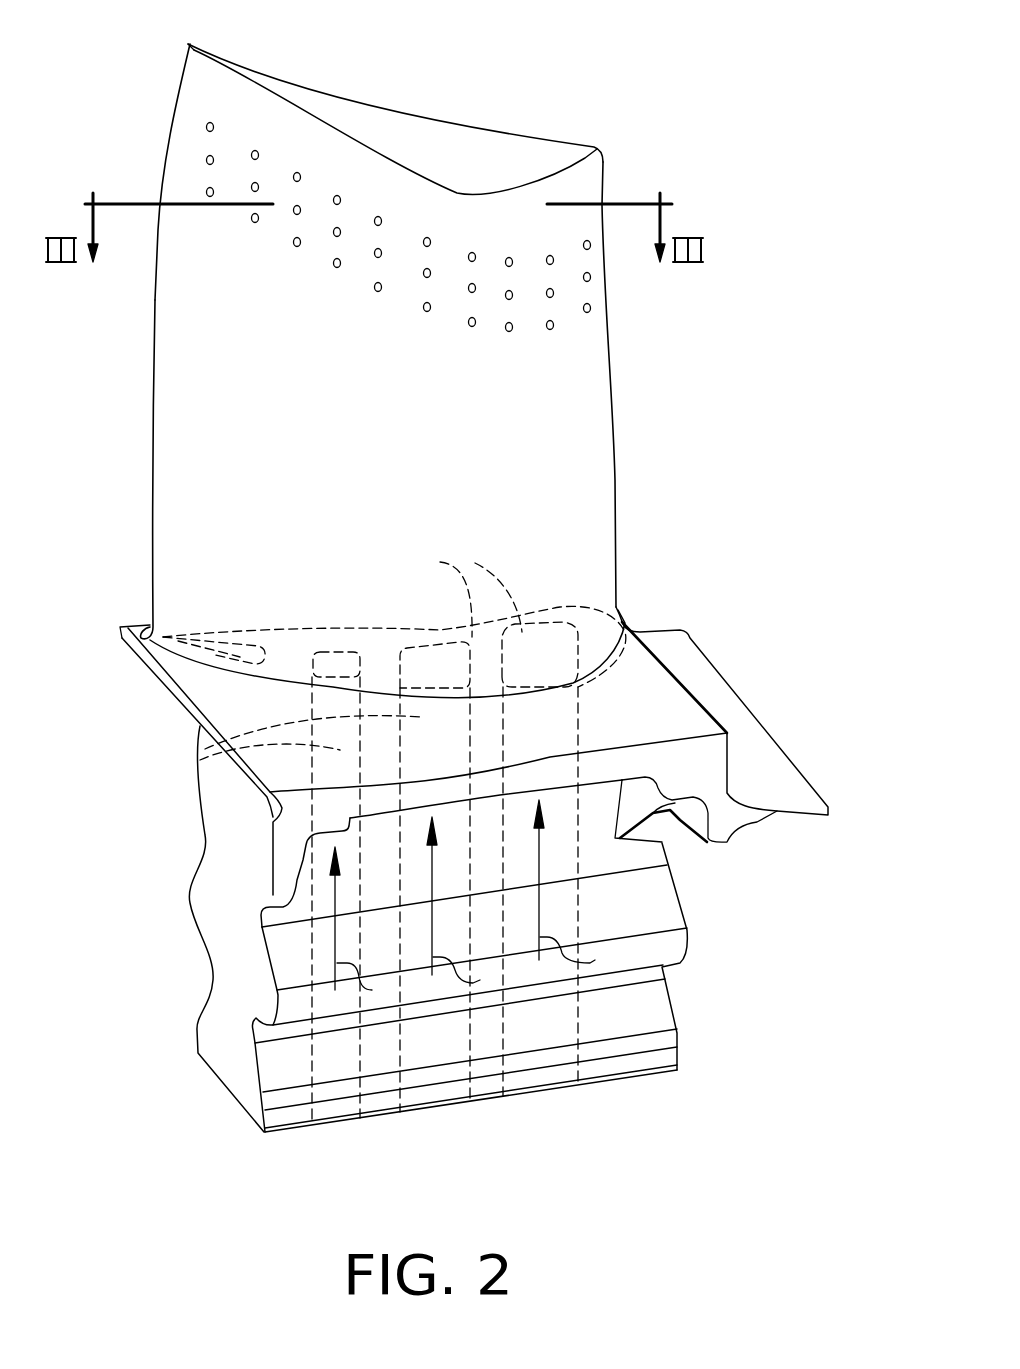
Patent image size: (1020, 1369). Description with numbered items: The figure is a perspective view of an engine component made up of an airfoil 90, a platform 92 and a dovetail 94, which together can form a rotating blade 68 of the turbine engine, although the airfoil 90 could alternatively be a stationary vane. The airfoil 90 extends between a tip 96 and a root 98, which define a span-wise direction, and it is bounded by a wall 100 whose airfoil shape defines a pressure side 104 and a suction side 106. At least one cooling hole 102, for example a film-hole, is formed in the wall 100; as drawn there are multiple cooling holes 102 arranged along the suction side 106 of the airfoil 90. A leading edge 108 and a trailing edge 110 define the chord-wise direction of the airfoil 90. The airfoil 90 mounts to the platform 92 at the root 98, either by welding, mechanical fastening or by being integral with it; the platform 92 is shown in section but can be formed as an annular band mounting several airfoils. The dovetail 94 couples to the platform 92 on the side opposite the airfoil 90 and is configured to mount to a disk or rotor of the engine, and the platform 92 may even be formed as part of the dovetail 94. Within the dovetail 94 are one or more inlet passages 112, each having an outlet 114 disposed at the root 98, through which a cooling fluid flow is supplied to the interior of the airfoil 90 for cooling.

The rotating blade 68 is at (88, 109).
The airfoil 90 is at (534, 440).
The platform 92 is at (677, 717).
The dovetail 94 is at (653, 908).
The tip 96 is at (527, 163).
The root 98 is at (230, 672).
The wall 100 is at (210, 257).
The cooling hole 102 is at (590, 277).
The pressure side 104 is at (410, 125).
The suction side 106 is at (306, 113).
The leading edge 108 is at (616, 487).
The trailing edge 110 is at (154, 382).
The inlet passage 112 is at (198, 763).
The outlet 114 is at (455, 589).